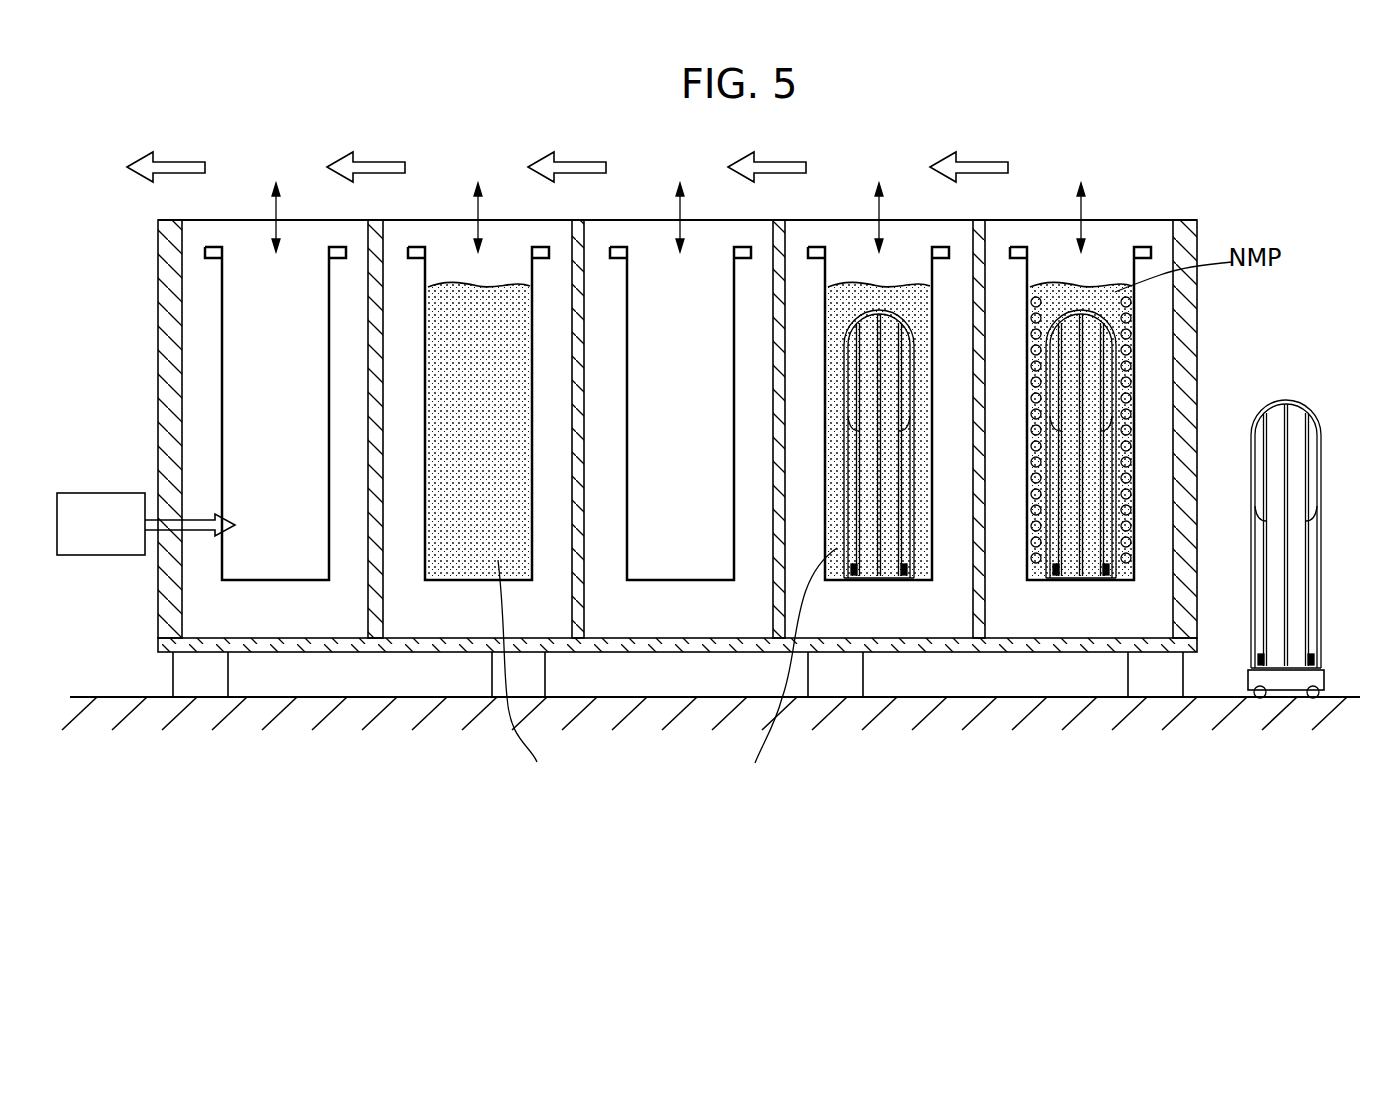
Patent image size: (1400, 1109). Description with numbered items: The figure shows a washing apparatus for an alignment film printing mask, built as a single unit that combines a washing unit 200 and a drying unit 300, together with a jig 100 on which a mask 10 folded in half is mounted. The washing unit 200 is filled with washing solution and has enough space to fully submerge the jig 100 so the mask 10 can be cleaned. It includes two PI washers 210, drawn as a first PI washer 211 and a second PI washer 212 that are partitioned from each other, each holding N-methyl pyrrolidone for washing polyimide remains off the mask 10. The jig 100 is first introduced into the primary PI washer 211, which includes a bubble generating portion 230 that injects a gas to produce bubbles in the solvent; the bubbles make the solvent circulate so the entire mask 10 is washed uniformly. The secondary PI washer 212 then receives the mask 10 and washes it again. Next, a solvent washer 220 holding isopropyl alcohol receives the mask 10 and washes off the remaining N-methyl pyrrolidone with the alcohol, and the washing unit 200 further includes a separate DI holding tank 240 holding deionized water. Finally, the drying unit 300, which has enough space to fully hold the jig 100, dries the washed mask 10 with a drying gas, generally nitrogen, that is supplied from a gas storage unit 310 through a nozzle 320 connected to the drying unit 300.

The mask 10 is at (1105, 512).
The jig 100 is at (1296, 391).
The washing unit 200 is at (662, 547).
The PI washer 210 is at (979, 556).
The first PI washer 211 is at (1058, 586).
The second PI washer 212 is at (857, 586).
The NMP washer 220 is at (452, 586).
The bubble generating portion 230 is at (1131, 302).
The DI holding tank 240 is at (655, 586).
The drying unit 300 is at (275, 586).
The gas storage unit 310 is at (98, 500).
The nozzle 320 is at (235, 530).